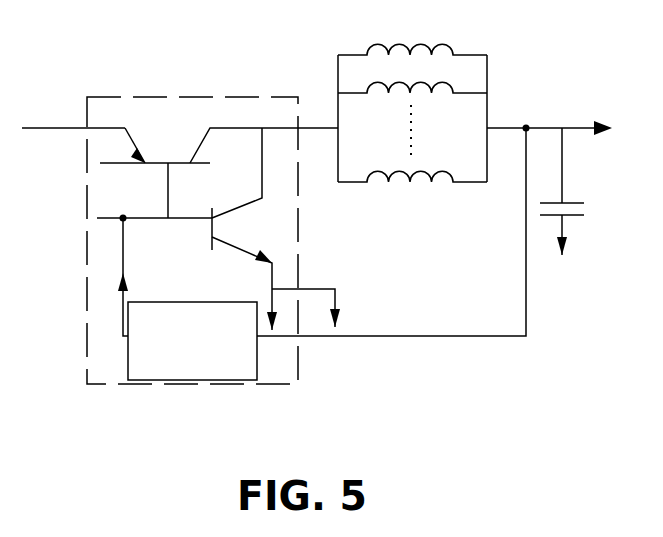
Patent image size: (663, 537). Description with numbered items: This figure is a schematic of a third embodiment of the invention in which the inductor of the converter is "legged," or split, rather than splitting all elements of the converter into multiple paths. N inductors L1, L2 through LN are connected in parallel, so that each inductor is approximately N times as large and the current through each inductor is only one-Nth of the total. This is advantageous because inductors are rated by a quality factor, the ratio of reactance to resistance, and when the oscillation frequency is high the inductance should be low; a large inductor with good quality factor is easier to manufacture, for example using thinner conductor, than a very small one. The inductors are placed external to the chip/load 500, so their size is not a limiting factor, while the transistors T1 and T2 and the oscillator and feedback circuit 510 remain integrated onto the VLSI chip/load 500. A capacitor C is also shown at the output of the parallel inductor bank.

The VLSI chip/load 500 is at (198, 247).
The oscillator and feedback circuit 510 is at (140, 380).
The transistor T1 is at (219, 173).
The transistor T2 is at (187, 229).
The inductor L1 is at (412, 42).
The inductor L2 is at (412, 79).
The inductor LN is at (412, 197).
The capacitor C is at (572, 191).